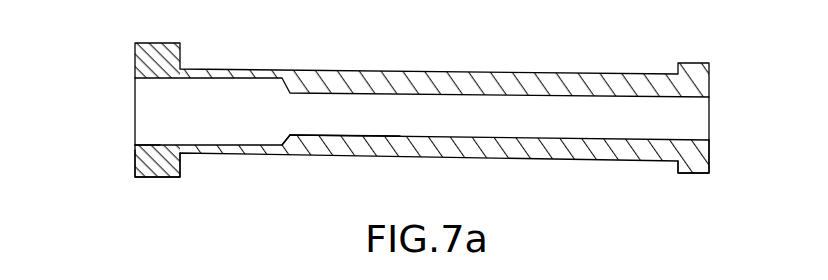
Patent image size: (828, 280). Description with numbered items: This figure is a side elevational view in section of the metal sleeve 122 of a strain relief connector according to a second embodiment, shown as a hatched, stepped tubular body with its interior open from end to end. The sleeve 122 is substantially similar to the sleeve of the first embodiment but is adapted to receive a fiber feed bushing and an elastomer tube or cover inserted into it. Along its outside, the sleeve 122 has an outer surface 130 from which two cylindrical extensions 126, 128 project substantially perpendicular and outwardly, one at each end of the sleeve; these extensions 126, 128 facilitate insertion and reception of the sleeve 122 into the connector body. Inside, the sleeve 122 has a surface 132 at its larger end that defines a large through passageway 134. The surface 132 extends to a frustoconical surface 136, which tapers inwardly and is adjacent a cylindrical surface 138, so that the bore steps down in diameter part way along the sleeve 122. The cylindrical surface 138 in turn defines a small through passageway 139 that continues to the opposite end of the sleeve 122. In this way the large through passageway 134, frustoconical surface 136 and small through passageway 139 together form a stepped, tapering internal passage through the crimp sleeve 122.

The metal sleeve 122 is at (582, 160).
The cylindrical extension 126 is at (160, 178).
The cylindrical extension 128 is at (690, 175).
The surface 130 is at (486, 72).
The surface 132 is at (134, 144).
The large through passageway 134 is at (145, 114).
The frustoconical surface 136 is at (283, 144).
The cylindrical surface 138 is at (352, 135).
The small through passageway 139 is at (692, 118).